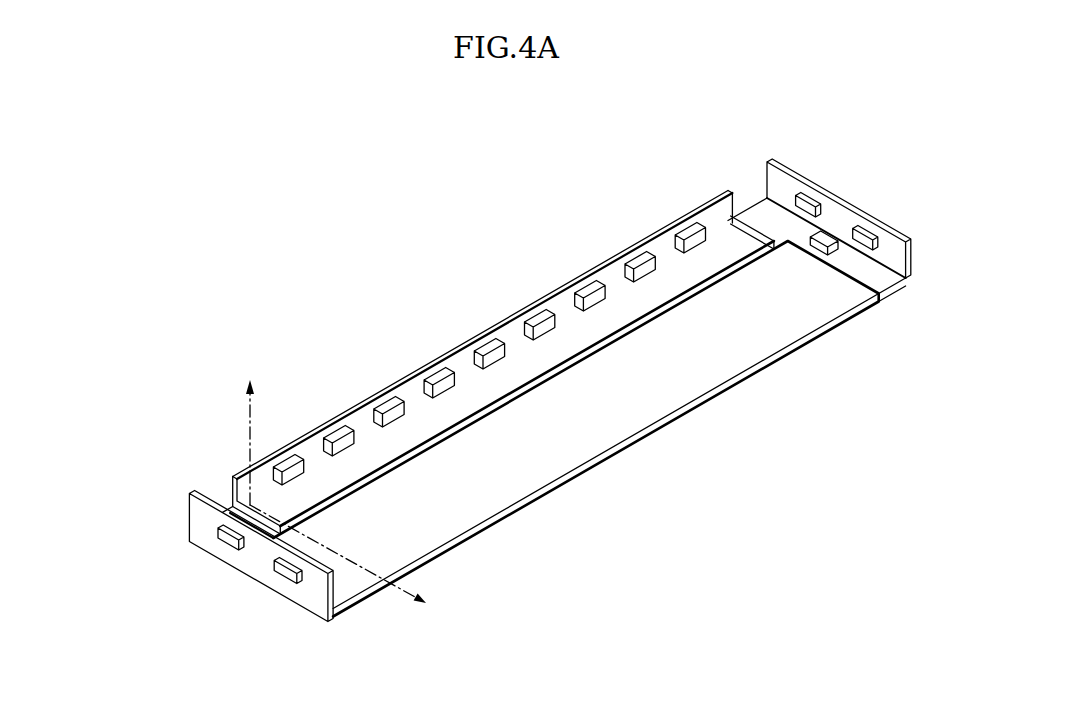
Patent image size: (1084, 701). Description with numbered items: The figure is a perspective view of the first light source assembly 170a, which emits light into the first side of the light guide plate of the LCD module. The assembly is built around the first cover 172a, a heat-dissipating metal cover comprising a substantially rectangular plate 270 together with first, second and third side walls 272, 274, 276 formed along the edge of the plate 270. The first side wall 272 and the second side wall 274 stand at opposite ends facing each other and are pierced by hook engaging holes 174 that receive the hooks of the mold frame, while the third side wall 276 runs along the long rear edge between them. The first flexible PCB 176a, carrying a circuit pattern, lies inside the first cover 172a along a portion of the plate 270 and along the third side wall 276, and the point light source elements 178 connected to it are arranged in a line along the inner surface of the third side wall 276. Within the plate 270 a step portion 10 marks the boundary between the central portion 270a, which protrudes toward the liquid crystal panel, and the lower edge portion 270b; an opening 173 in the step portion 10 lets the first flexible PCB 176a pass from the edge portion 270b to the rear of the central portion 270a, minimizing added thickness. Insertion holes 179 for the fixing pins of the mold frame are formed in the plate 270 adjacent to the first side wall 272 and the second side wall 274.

The step portion 10 is at (828, 268).
The first light source assembly 170a is at (178, 470).
The first cover 172a is at (240, 500).
The opening 173 is at (290, 536).
The hook engaging holes 174 is at (226, 546).
The first flexible PCB 176a is at (520, 370).
The point light source elements 178 is at (443, 383).
The insertion holes 179 is at (826, 243).
The plate 270 is at (700, 131).
The central portion 270a is at (700, 325).
The edge portion 270b is at (762, 215).
The first side wall 272 is at (197, 522).
The second side wall 274 is at (783, 187).
The third side wall 276 is at (357, 408).